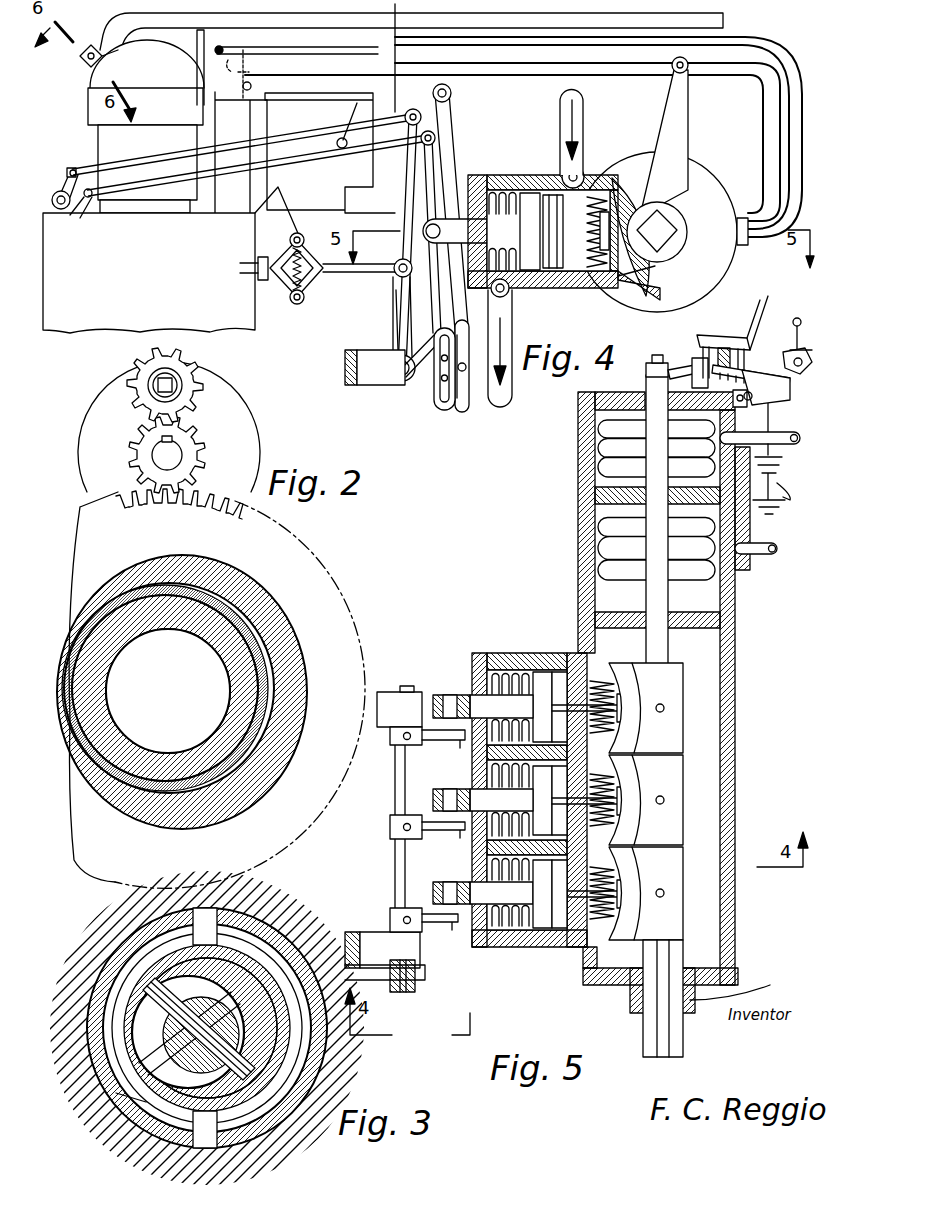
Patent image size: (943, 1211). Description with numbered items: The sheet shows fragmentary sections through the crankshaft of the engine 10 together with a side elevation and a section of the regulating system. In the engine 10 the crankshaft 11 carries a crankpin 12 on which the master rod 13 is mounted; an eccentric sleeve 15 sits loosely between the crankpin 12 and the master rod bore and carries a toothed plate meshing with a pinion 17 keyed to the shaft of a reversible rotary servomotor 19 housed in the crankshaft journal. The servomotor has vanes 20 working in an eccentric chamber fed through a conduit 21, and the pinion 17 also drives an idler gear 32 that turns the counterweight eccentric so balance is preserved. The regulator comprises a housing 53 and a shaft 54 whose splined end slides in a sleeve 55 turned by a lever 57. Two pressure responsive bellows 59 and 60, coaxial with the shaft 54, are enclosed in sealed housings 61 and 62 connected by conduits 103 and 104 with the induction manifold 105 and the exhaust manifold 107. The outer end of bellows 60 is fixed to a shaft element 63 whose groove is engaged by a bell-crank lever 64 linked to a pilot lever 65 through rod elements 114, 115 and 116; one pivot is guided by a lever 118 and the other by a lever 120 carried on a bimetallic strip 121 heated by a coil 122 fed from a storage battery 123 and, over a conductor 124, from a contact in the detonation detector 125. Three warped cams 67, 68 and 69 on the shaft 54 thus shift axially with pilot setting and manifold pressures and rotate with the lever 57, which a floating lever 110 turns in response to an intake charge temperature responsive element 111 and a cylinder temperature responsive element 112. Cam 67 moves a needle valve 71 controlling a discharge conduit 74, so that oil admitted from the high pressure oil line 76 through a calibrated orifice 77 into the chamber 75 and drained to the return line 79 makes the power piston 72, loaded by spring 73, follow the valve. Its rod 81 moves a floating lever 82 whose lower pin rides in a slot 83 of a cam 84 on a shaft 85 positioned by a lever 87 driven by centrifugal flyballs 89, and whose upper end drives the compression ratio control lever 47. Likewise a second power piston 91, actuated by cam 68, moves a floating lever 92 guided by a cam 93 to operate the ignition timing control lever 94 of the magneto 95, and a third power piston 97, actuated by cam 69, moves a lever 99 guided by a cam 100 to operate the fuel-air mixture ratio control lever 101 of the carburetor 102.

In FIG. 4, the engine 10 is at (88, 322).
In FIG. 3, the engine 10 is at (76, 971).
In FIG. 3, the crankshaft 11 is at (107, 947).
In FIG. 2, the crankpin 12 is at (300, 652).
In FIG. 2, the master rod 13 is at (300, 612).
In FIG. 2, the eccentric sleeve 15 is at (300, 582).
In FIG. 2, the pinion 17 is at (215, 440).
In FIG. 2, the reversible rotary servomotor 19 is at (255, 445).
In FIG. 3, the reversible rotary servomotor 19 is at (150, 1103).
In FIG. 3, the vanes 20 is at (165, 1060).
In FIG. 3, the conduit 21 is at (210, 907).
In FIG. 2, the idler gear 32 is at (205, 372).
In FIG. 4, the compression ratio control lever 47 is at (80, 220).
In FIG. 4, the housing 53 is at (630, 300).
In FIG. 5, the housing 53 is at (582, 975).
In FIG. 4, the shaft 54 is at (670, 238).
In FIG. 5, the shaft 54 is at (648, 1020).
In FIG. 4, the sleeve 55 is at (680, 218).
In FIG. 5, the sleeve 55 is at (765, 985).
In FIG. 4, the lever 57 is at (680, 135).
In FIG. 5, the bellows 59 is at (605, 545).
In FIG. 5, the bellows 60 is at (600, 445).
In FIG. 5, the sealed housing 61 is at (600, 590).
In FIG. 5, the sealed housing 62 is at (596, 482).
In FIG. 5, the shaft element 63 is at (642, 370).
In FIG. 5, the bell-crank lever 64 is at (665, 376).
In FIG. 5, the pilot lever 65 is at (812, 350).
In FIG. 4, the warped cam 67 is at (650, 274).
In FIG. 5, the warped cam 67 is at (675, 888).
In FIG. 5, the warped cam 68 is at (675, 812).
In FIG. 5, the warped cam 69 is at (675, 724).
In FIG. 4, the needle valve 71 is at (608, 172).
In FIG. 5, the needle valve 71 is at (575, 930).
In FIG. 4, the power piston 72 is at (548, 192).
In FIG. 5, the power piston 72 is at (535, 930).
In FIG. 4, the spring 73 is at (515, 190).
In FIG. 4, the discharge conduit 74 is at (525, 288).
In FIG. 4, the chamber 75 is at (590, 288).
In FIG. 4, the high pressure oil line 76 is at (584, 120).
In FIG. 4, the calibrated orifice 77 is at (562, 165).
In FIG. 4, the low pressure return line 79 is at (502, 408).
In FIG. 4, the rod 81 is at (398, 262).
In FIG. 5, the rod 81 is at (510, 920).
In FIG. 4, the floating lever 82 is at (410, 197).
In FIG. 5, the floating lever 82 is at (430, 890).
In FIG. 4, the slot 83 is at (404, 382).
In FIG. 4, the cam 84 is at (440, 412).
In FIG. 5, the cam 84 is at (418, 940).
In FIG. 4, the shaft 85 is at (375, 390).
In FIG. 5, the shaft 85 is at (395, 862).
In FIG. 4, the lever 87 is at (392, 318).
In FIG. 4, the centrifugal flyballs 89 is at (290, 305).
In FIG. 5, the second power piston 91 is at (470, 790).
In FIG. 4, the second floating lever 92 is at (420, 170).
In FIG. 5, the second floating lever 92 is at (430, 795).
In FIG. 4, the cam 93 is at (462, 410).
In FIG. 5, the cam 93 is at (437, 838).
In FIG. 4, the ignition timing control lever 94 is at (60, 190).
In FIG. 4, the magneto 95 is at (62, 175).
In FIG. 5, the third power piston 97 is at (540, 675).
In FIG. 4, the lever 99 is at (448, 125).
In FIG. 5, the lever 99 is at (440, 694).
In FIG. 4, the cam 100 is at (393, 305).
In FIG. 5, the cam 100 is at (395, 745).
In FIG. 4, the fuel-air mixture ratio control lever 101 is at (330, 112).
In FIG. 4, the carburetor 102 is at (250, 220).
In FIG. 4, the conduit 103 is at (455, 55).
In FIG. 5, the conduit 103 is at (760, 556).
In FIG. 4, the conduit 104 is at (606, 40).
In FIG. 5, the conduit 104 is at (780, 446).
In FIG. 4, the induction manifold 105 is at (198, 130).
In FIG. 4, the exhaust manifold 107 is at (190, 56).
In FIG. 4, the floating lever 110 is at (292, 50).
In FIG. 4, the intake charge temperature responsive element 111 is at (252, 50).
In FIG. 4, the cylinder temperature responsive element 112 is at (190, 105).
In FIG. 5, the rod element 114 is at (797, 320).
In FIG. 5, the rod element 115 is at (730, 348).
In FIG. 5, the rod element 116 is at (718, 335).
In FIG. 5, the lever 118 is at (782, 380).
In FIG. 5, the lever 120 is at (703, 358).
In FIG. 5, the bimetallic strip 121 is at (772, 368).
In FIG. 5, the heating coil 122 is at (760, 300).
In FIG. 5, the storage battery 123 is at (790, 504).
In FIG. 4, the conductor 124 is at (730, 26).
In FIG. 5, the conductor 124 is at (770, 290).
In FIG. 4, the detonation detector 125 is at (80, 60).